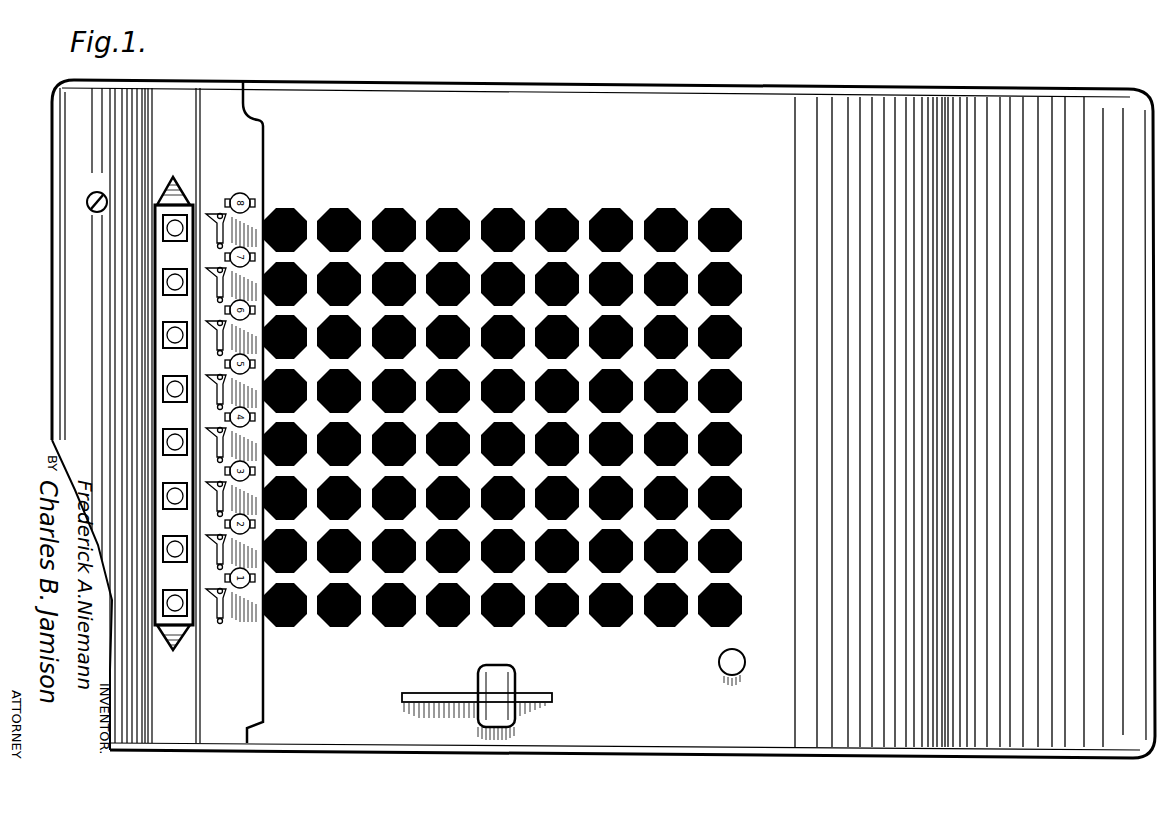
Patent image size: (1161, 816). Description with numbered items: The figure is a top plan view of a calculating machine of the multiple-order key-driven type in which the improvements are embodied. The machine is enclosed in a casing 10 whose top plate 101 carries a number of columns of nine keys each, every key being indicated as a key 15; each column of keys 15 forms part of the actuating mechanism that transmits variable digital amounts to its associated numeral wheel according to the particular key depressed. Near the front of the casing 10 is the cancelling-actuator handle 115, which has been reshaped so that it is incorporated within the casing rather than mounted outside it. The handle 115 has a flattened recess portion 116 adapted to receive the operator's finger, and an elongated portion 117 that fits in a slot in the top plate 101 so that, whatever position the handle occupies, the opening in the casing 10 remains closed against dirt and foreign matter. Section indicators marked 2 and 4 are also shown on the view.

The section line 2- 2 is at (70, 200).
The section line 4- 4 is at (325, 727).
The casing 10 is at (656, 106).
The top plate 101 is at (862, 62).
The key 15 is at (518, 222).
The cancelling-actuator handle 115 is at (465, 708).
The flattened recess portion 116 is at (517, 692).
The elongated portion 117 is at (542, 706).